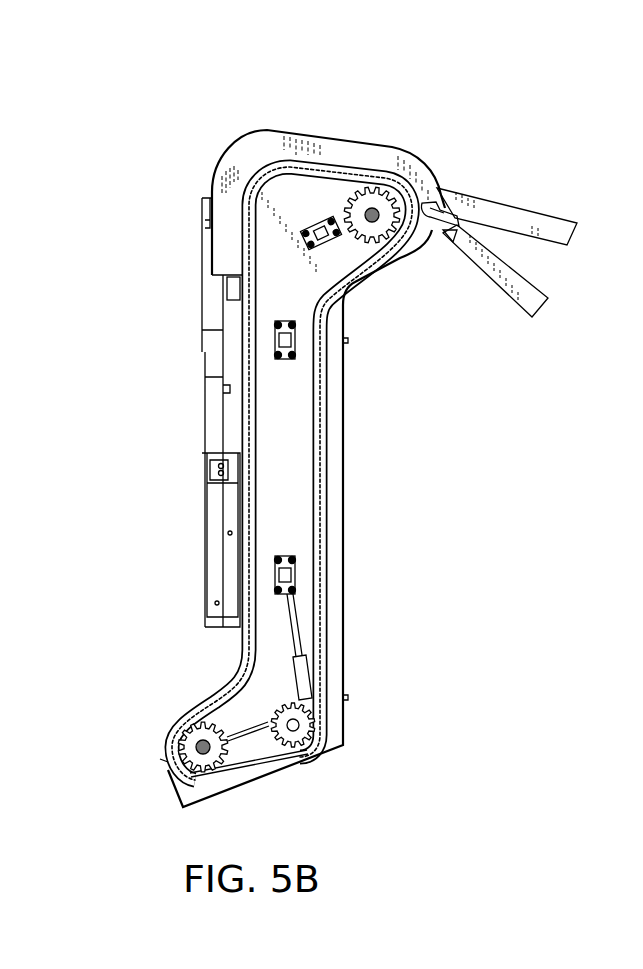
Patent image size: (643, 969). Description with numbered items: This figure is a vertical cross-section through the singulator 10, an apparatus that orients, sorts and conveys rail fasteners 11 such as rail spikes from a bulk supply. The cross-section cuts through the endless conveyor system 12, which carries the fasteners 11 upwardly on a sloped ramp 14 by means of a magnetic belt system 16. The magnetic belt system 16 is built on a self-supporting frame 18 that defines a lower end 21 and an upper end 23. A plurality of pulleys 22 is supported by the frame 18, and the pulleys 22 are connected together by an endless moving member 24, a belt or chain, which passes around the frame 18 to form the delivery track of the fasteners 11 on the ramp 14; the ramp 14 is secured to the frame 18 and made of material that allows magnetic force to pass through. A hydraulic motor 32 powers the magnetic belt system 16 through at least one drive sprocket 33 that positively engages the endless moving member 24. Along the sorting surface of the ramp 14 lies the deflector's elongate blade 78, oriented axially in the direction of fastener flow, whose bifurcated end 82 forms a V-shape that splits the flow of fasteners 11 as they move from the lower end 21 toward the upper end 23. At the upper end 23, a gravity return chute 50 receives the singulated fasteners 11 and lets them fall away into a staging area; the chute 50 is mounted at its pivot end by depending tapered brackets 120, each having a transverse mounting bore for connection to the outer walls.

The singulator 10 is at (196, 184).
The rail fasteners 11 is at (573, 235).
The endless conveyor system 12 is at (147, 738).
The sloped ramp 14 is at (242, 653).
The magnetic belt system 16 is at (372, 719).
The self-supporting frame 18 is at (342, 527).
The lower end 21 is at (160, 755).
The pulleys 22 is at (305, 733).
The upper end 23 is at (233, 152).
The endless moving member 24 is at (207, 702).
The hydraulic motor 32 is at (368, 200).
The drive sprocket 33 is at (343, 203).
The gravity return chute 50 is at (508, 213).
The elongate blade 78 is at (213, 542).
The bifurcated end 82 is at (213, 470).
The tapered brackets 120 is at (443, 237).